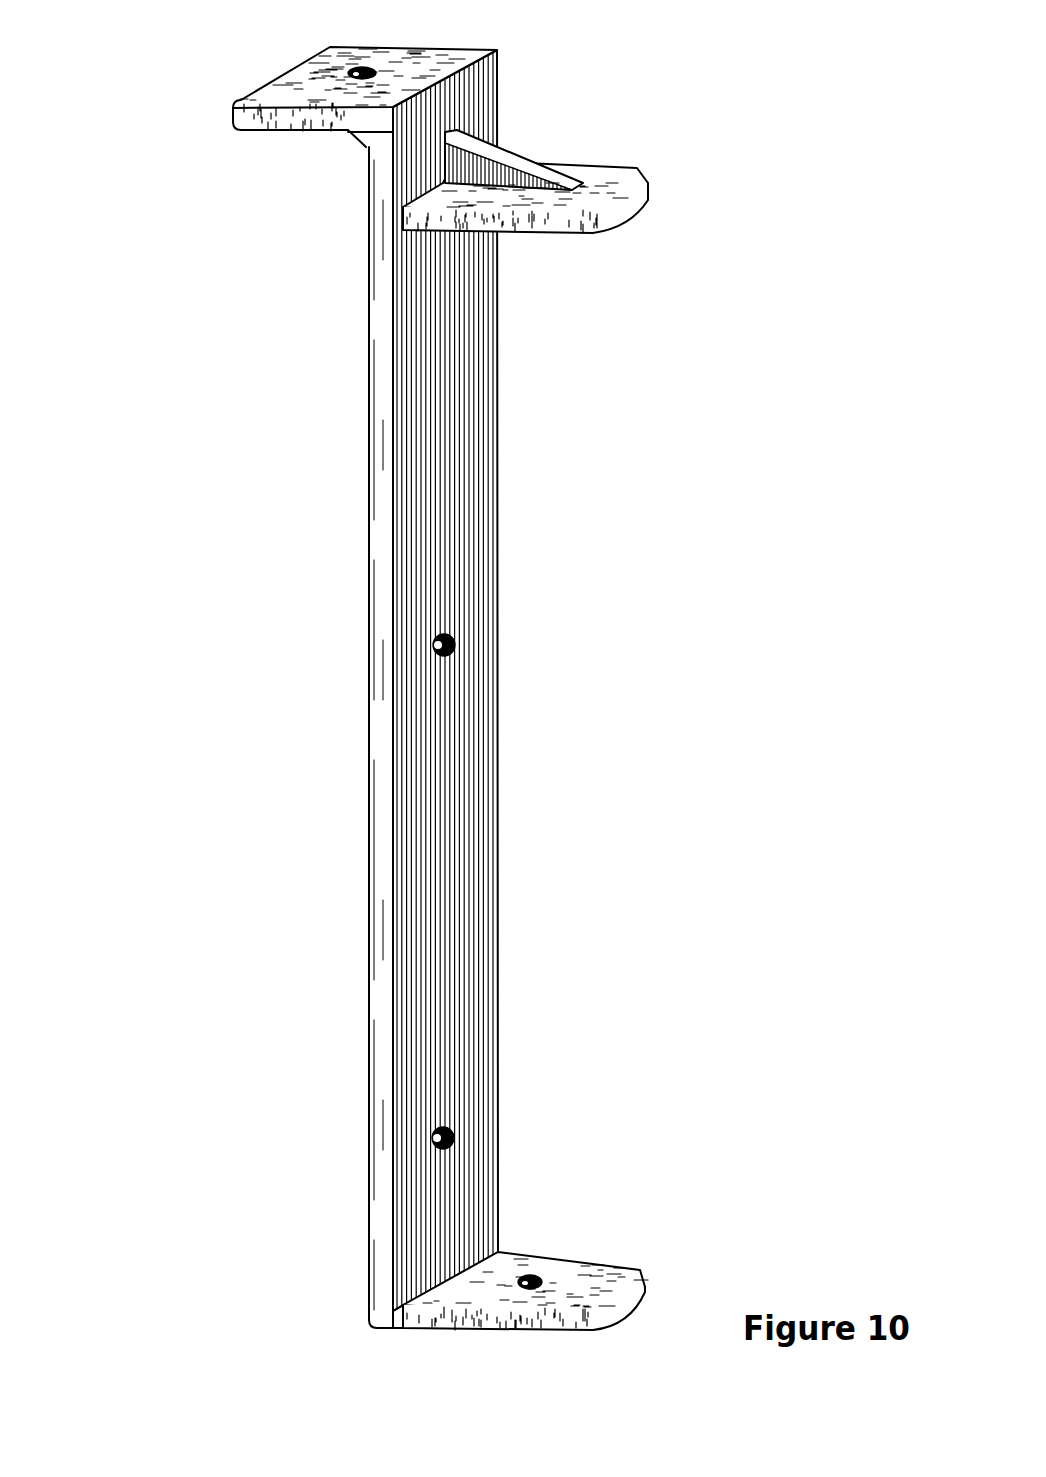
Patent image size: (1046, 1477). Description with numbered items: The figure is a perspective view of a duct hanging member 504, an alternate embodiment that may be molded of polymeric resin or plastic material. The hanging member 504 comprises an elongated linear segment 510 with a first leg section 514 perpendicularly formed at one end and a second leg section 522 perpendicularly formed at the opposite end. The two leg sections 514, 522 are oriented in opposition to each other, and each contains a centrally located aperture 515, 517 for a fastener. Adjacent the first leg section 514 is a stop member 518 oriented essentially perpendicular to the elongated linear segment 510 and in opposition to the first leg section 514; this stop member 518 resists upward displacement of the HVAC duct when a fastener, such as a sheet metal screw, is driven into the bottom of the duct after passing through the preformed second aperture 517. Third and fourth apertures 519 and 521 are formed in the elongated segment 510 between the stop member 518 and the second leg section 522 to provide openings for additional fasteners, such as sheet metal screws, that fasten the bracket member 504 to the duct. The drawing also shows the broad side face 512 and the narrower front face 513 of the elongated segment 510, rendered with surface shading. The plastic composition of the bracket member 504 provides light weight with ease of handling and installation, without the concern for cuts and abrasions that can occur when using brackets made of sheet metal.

The duct hanging member 504 is at (208, 708).
The elongated linear segment 510 is at (415, 689).
The side face of beam 512 is at (455, 340).
The front face of beam 513 is at (428, 1210).
The first leg section 514 is at (354, 115).
The aperture 515 is at (368, 66).
The second aperture 517 is at (538, 1278).
The stop member 518 is at (603, 193).
The third aperture 519 is at (450, 638).
The fourth aperture 521 is at (450, 1130).
The second leg section 522 is at (455, 1267).